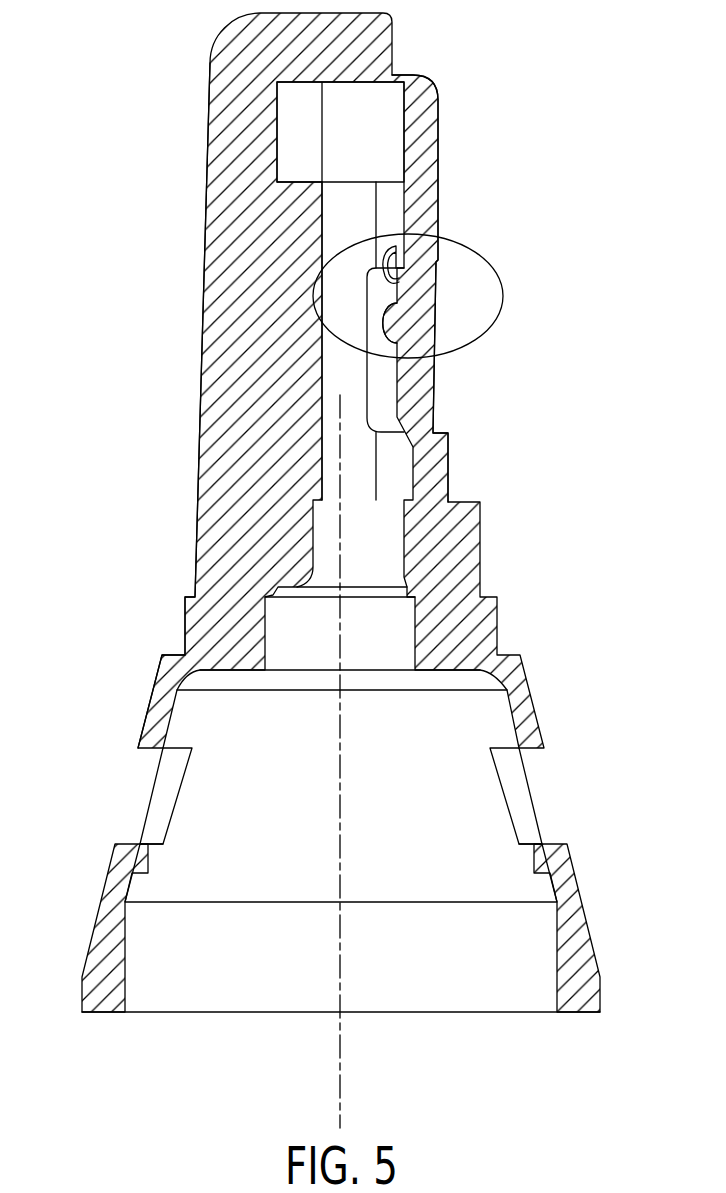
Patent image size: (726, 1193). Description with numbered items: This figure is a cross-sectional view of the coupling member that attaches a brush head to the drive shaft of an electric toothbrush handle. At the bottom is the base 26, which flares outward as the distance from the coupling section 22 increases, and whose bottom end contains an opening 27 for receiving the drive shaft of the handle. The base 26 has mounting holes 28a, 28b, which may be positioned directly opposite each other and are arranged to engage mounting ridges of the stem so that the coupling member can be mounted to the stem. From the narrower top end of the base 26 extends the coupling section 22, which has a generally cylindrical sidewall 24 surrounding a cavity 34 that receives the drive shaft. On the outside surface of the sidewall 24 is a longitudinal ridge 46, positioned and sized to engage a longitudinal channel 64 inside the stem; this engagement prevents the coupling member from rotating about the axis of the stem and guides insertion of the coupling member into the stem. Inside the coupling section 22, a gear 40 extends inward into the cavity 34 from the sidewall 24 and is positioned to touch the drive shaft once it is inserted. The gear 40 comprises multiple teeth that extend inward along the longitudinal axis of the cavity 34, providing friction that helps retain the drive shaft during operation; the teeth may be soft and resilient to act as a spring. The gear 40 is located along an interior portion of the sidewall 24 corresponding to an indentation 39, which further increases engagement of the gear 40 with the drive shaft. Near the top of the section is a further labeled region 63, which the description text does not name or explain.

The coupling section 22 is at (130, 268).
The sidewall 24 is at (428, 212).
The base 26 is at (98, 940).
The opening 27 is at (432, 957).
The mounting hole 28a is at (145, 813).
The mounting hole 28b is at (535, 803).
The cavity 34 is at (372, 455).
The indentation 39 is at (428, 362).
The gear 40 is at (393, 325).
The longitudinal ridge 46 is at (222, 350).
The chamber 63 is at (378, 148).
The longitudinal channel 64 is at (322, 410).